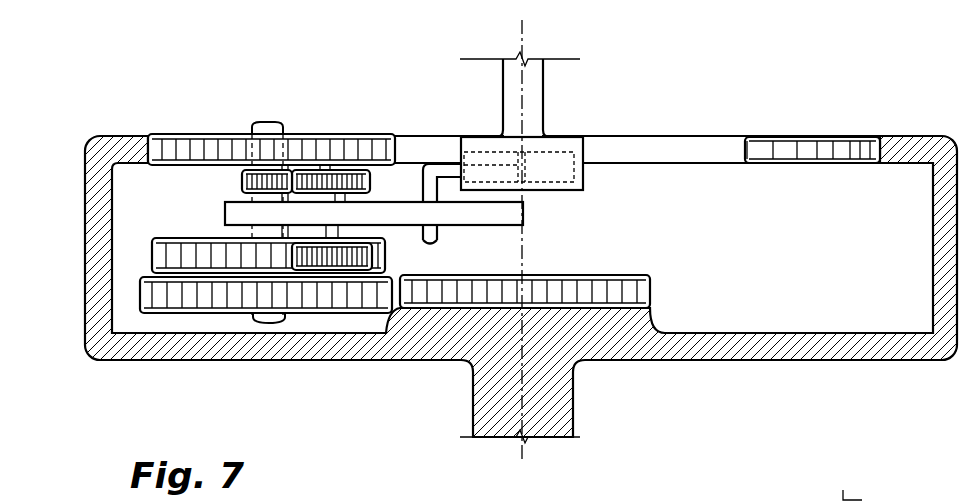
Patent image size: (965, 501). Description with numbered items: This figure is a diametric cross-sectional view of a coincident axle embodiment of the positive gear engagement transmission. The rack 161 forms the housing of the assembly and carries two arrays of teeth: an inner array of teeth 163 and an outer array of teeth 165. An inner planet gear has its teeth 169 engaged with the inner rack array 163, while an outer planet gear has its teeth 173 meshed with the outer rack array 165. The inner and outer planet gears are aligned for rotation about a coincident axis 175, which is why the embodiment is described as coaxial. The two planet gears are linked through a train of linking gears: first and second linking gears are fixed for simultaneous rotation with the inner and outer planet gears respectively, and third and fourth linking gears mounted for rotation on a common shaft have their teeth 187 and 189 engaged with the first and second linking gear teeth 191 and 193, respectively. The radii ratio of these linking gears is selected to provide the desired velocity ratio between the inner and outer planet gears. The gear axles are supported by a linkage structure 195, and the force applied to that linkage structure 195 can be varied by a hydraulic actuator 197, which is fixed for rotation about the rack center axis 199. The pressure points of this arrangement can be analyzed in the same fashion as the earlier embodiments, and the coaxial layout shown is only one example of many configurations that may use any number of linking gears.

The rack 161 is at (740, 347).
The inner array of teeth 163 is at (653, 292).
The outer array of teeth 165 is at (148, 133).
The teeth 169 is at (313, 300).
The teeth 173 is at (403, 133).
The coincident axis 175 is at (862, 499).
The teeth 187 is at (372, 248).
The teeth 189 is at (372, 180).
The first linking gear teeth 191 is at (158, 257).
The second linking gear teeth 193 is at (244, 182).
The linkage structure 195 is at (502, 213).
The hydraulic actuator 197 is at (572, 155).
The rack center axis 199 is at (520, 33).